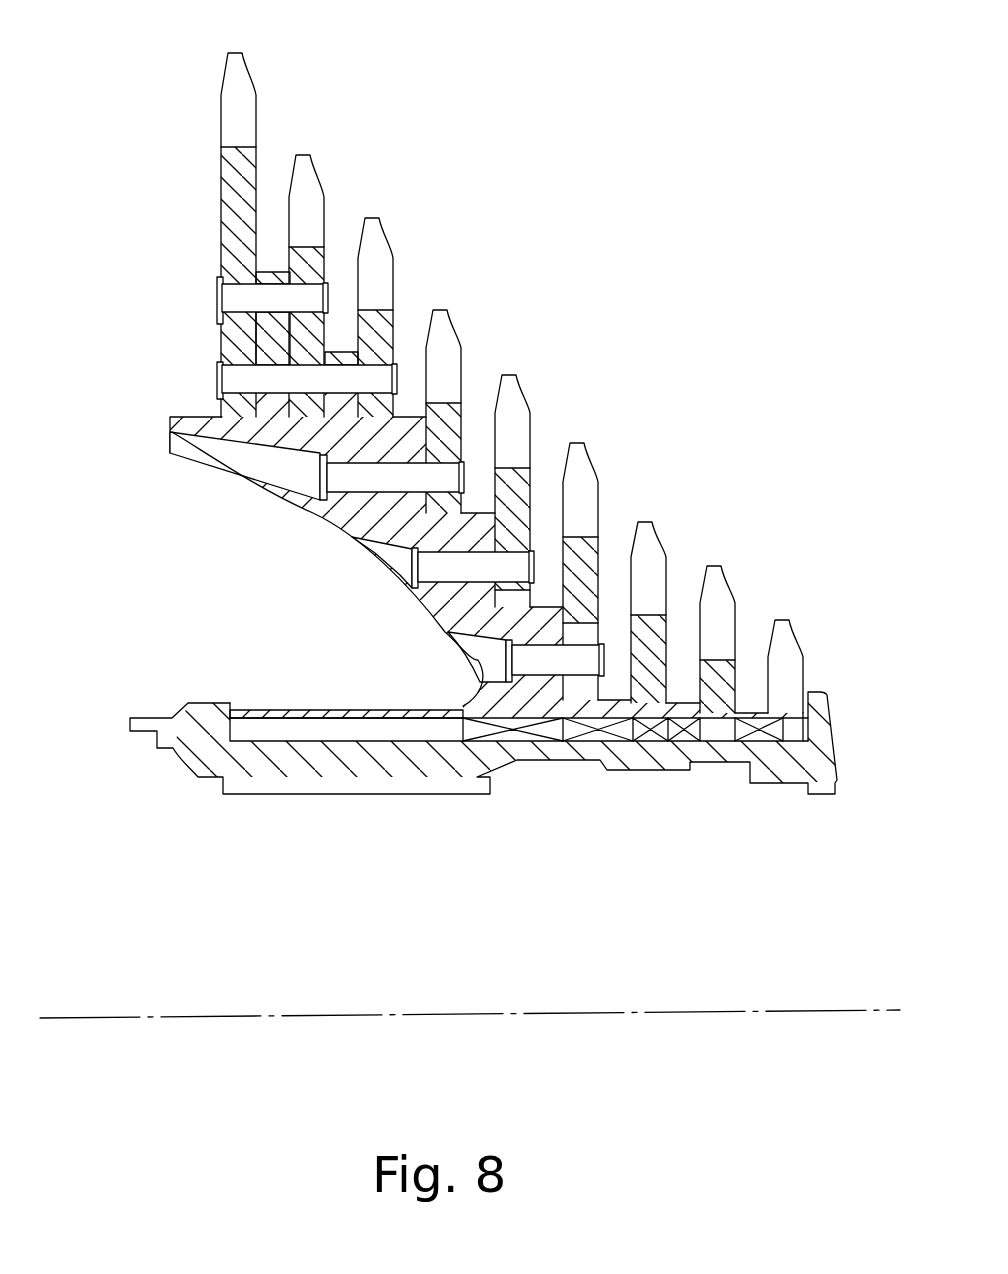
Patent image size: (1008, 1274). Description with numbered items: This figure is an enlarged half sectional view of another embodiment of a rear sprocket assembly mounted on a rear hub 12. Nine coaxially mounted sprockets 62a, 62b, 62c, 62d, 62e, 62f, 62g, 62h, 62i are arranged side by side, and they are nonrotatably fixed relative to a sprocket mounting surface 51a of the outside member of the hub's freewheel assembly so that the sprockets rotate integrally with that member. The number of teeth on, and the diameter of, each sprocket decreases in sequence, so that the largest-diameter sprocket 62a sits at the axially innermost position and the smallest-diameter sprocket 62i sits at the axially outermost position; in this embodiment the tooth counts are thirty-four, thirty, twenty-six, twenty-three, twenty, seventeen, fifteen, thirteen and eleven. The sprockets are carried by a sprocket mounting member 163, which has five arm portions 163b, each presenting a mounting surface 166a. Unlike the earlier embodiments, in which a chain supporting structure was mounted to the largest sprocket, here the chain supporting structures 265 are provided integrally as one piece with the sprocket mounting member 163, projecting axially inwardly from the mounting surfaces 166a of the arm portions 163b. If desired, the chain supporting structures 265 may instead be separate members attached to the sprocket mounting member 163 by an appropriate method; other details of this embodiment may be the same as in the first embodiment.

The rear hub 12 is at (479, 703).
The sprocket mounting surface 51a is at (316, 740).
The sprocket 62a is at (243, 80).
The sprocket 62b is at (311, 182).
The sprocket 62c is at (380, 245).
The sprocket 62d is at (448, 337).
The sprocket 62e is at (517, 402).
The sprocket 62f is at (585, 470).
The sprocket 62g is at (653, 549).
The sprocket 62h is at (724, 595).
The sprocket 62i is at (792, 650).
The sprocket mounting member 163 is at (315, 513).
The arm portion 163b is at (296, 425).
The mounting surface 166a is at (230, 336).
The chain supporting structure 265 is at (174, 431).